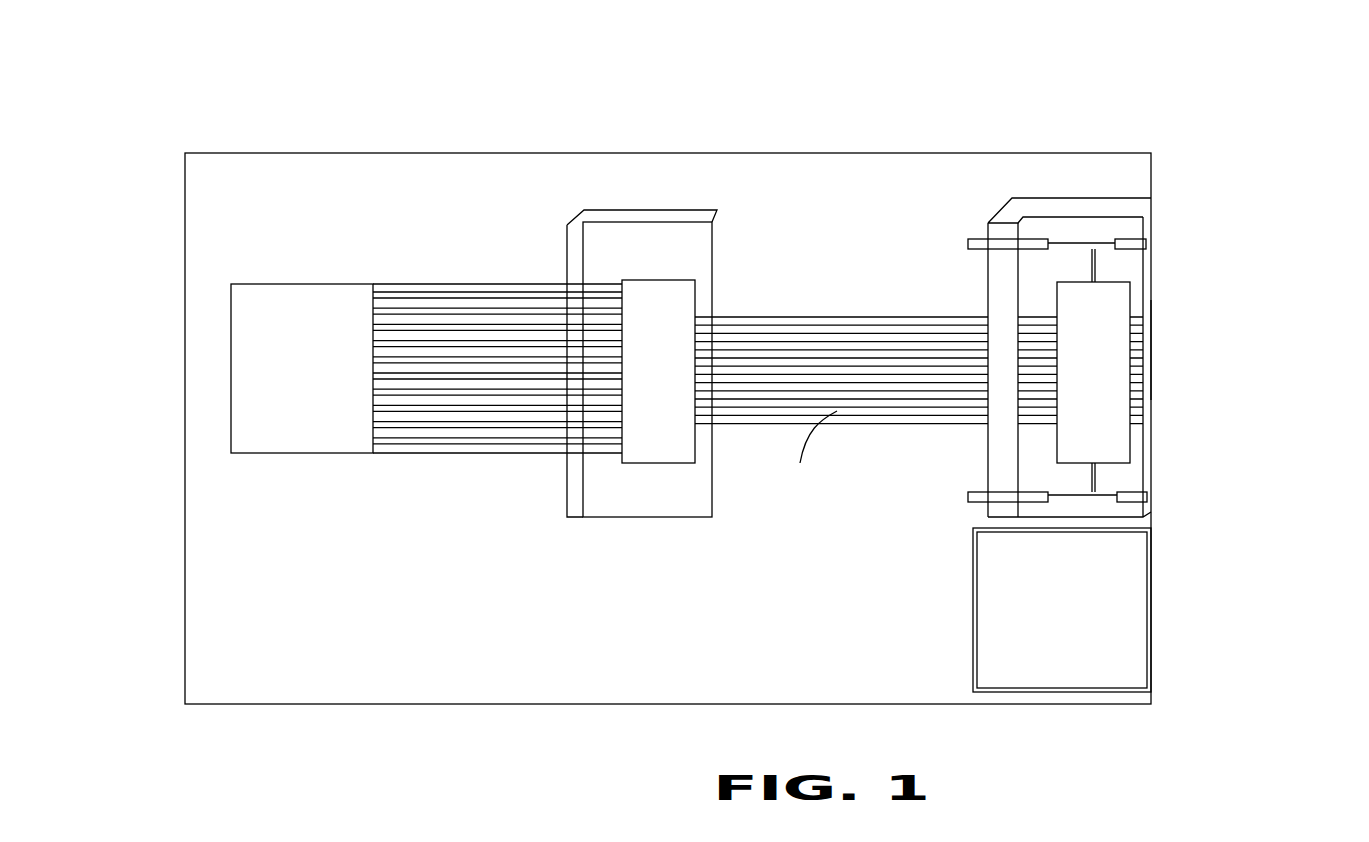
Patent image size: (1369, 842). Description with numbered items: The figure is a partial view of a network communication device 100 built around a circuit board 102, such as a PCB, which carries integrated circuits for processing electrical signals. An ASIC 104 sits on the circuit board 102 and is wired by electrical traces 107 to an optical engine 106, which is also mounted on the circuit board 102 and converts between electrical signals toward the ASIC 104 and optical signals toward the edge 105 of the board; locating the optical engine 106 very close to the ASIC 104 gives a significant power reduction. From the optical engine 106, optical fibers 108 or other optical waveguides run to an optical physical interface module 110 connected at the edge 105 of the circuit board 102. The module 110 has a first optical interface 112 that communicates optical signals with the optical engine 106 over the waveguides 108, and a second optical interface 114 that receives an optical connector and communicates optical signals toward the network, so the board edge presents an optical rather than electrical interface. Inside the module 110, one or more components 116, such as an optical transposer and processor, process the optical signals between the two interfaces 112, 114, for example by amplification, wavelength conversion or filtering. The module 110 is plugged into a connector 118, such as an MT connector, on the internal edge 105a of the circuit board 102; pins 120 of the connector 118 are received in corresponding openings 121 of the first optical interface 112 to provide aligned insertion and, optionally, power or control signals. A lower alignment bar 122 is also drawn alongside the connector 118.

The network communication device 100 is at (266, 124).
The circuit board 102 is at (333, 627).
The ASIC 104 is at (278, 425).
The edge of the circuit board 105 is at (1085, 136).
The internal edge of the circuit board 105a is at (1105, 696).
The optical engine 106 is at (675, 447).
The electrical traces 107 is at (453, 284).
The optical fibers 108 is at (853, 317).
The optical physical interface module 110 is at (1130, 223).
The first optical interface 112 is at (1003, 427).
The second optical interface 114 is at (1161, 341).
The component 116 is at (1110, 373).
The connector 118 is at (1023, 198).
The pins 120 is at (1003, 513).
The openings 121 is at (1038, 513).
The lower alignment bar 122 is at (1147, 495).